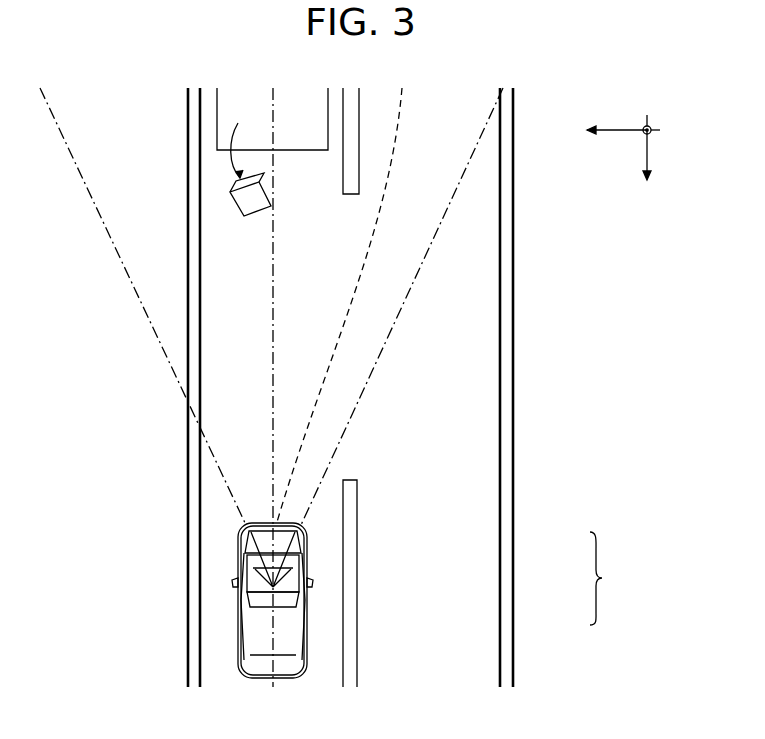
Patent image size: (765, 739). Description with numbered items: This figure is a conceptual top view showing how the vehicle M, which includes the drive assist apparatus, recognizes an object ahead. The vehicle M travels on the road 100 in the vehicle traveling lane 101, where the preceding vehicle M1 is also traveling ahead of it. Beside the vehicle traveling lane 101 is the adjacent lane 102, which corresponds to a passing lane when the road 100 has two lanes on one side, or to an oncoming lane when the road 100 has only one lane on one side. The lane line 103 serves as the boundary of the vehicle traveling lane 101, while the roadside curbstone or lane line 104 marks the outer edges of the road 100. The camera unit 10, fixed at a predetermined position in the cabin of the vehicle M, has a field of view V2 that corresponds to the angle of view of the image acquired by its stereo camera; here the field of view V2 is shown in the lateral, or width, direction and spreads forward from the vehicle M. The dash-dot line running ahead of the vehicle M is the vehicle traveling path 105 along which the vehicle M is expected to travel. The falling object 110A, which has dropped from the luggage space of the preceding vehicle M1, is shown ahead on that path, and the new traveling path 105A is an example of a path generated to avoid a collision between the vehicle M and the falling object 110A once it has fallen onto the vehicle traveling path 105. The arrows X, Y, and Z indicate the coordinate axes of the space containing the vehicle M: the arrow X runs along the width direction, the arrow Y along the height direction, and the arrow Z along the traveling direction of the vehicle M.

The camera unit 10 is at (243, 598).
The vehicle M is at (220, 600).
The preceding vehicle M1 is at (225, 103).
The falling object 110A is at (240, 210).
The field of view V2 is at (124, 268).
The road 100 is at (617, 578).
The vehicle traveling lane 101 is at (323, 597).
The adjacent lane 102 is at (473, 553).
The lane line 103 is at (350, 510).
The roadside curbstone or lane line 104 is at (190, 522).
The vehicle traveling path 105 is at (273, 442).
The new traveling path 105A is at (313, 381).
The arrow X is at (593, 136).
The arrow Y is at (655, 135).
The arrow Z is at (645, 178).